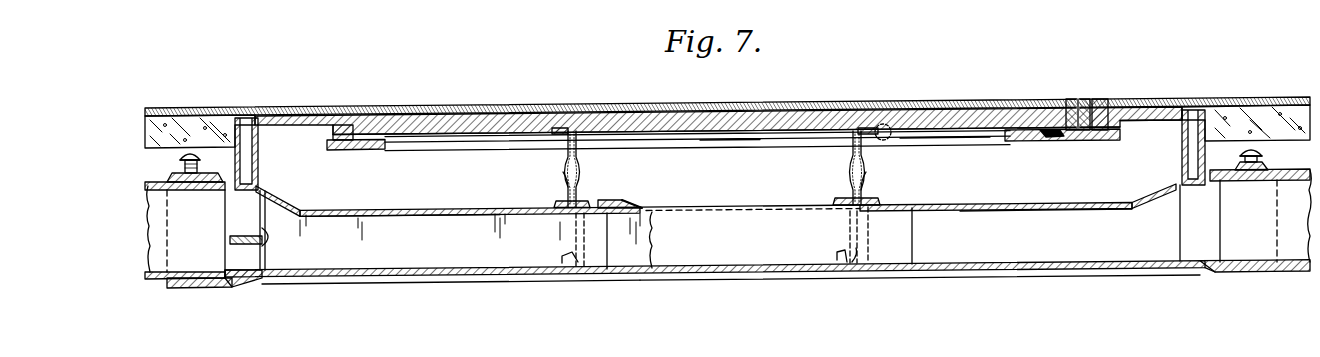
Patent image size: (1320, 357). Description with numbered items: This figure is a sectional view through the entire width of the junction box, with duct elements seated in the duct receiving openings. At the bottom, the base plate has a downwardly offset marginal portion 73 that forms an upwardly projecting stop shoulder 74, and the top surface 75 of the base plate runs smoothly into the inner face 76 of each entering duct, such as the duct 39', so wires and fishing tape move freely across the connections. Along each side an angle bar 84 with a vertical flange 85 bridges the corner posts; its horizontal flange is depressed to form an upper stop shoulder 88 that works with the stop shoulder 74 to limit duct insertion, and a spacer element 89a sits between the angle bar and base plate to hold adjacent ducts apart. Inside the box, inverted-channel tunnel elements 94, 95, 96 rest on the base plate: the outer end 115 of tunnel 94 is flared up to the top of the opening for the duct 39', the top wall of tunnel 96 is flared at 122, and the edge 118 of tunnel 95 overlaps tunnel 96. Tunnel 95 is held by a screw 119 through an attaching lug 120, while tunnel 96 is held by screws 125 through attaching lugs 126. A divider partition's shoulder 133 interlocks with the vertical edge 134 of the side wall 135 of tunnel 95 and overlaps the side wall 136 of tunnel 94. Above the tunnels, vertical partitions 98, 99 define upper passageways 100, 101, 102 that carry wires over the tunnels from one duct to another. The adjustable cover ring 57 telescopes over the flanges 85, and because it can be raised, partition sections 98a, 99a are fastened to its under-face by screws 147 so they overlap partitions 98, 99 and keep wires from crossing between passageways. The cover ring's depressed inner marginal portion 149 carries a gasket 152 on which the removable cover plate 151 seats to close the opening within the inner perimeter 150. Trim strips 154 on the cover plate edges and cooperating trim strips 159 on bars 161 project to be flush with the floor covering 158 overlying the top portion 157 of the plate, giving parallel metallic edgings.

The duct 39' is at (1255, 248).
The cover ring 57 is at (1162, 122).
The downwardly offset marginal portion 73 is at (212, 288).
The stop shoulder 74 is at (232, 286).
The top surface 75 is at (309, 270).
The inner face 76 is at (180, 270).
The angle bar 84 is at (1278, 162).
The vertical flange 85 is at (1182, 154).
The upper stop shoulder 88 is at (232, 197).
The spacer element 89a is at (158, 278).
The tunnel element 94 is at (1060, 205).
The tunnel element 95 is at (694, 205).
The tunnel element 96 is at (452, 209).
The vertical partition 98 is at (846, 177).
The partition section 98a is at (863, 164).
The vertical partition 99 is at (583, 172).
The partition section 99a is at (562, 174).
The upper passageway 100 is at (961, 179).
The upper passageway 101 is at (768, 179).
The upper passageway 102 is at (392, 195).
The outer end 115 is at (1170, 186).
The edge 118 is at (610, 199).
The screw 119 is at (836, 253).
The attaching lug 120 is at (838, 272).
The flared top wall portion 122 is at (293, 200).
The screw 125 is at (572, 255).
The attaching lug 126 is at (562, 266).
The shoulder 133 is at (845, 220).
The vertical edge 134 is at (856, 262).
The side wall 135 is at (707, 257).
The side wall 136 is at (993, 250).
The screw 147 is at (553, 135).
The depressed inner marginal portion 149 is at (1094, 142).
The inner perimeter 150 is at (385, 146).
The cover plate 151 is at (843, 81).
The gasket 152 is at (395, 147).
The trim strip 154 is at (1075, 98).
The top portion 157 is at (956, 81).
The floor covering 158 is at (1200, 75).
The trim strip 159 is at (1125, 78).
The bar 161 is at (322, 132).